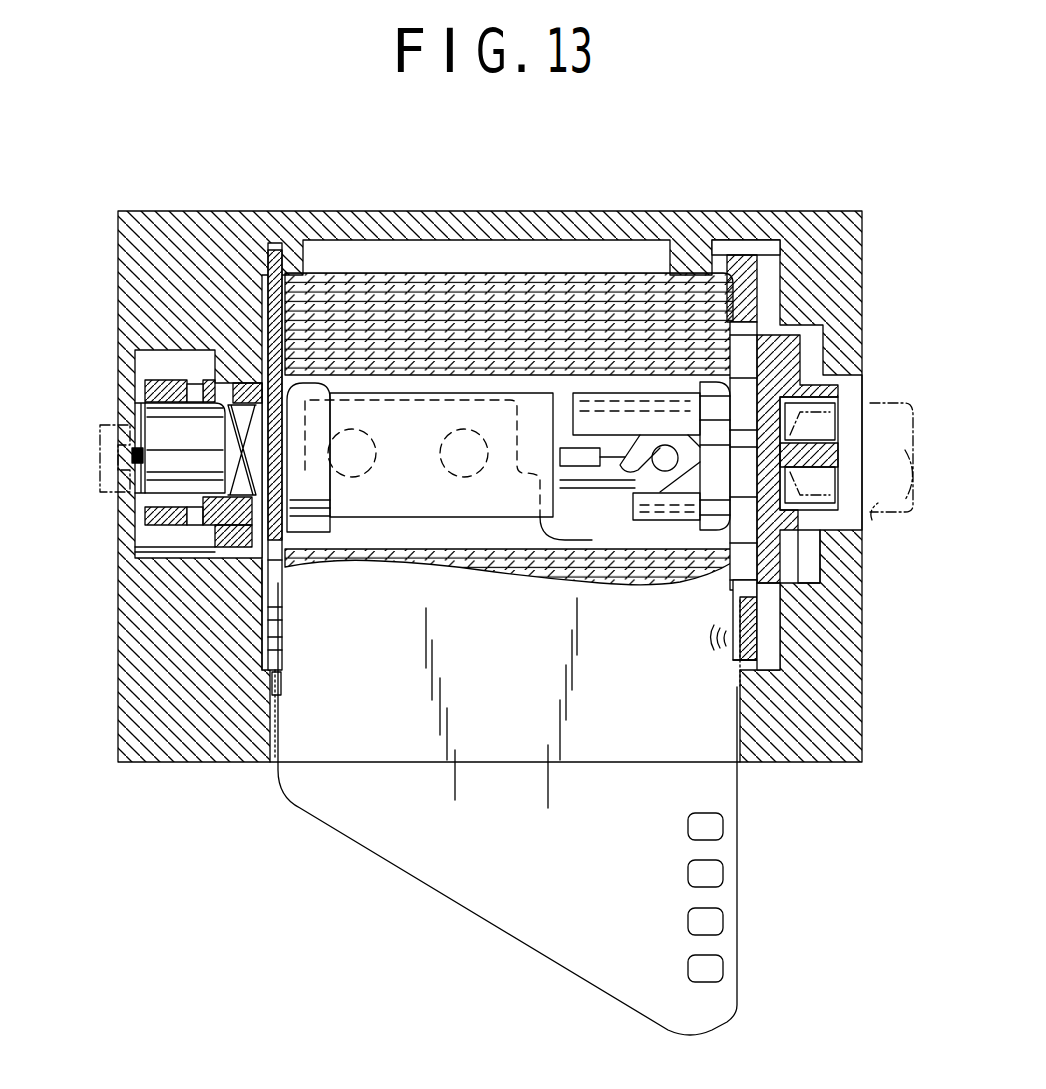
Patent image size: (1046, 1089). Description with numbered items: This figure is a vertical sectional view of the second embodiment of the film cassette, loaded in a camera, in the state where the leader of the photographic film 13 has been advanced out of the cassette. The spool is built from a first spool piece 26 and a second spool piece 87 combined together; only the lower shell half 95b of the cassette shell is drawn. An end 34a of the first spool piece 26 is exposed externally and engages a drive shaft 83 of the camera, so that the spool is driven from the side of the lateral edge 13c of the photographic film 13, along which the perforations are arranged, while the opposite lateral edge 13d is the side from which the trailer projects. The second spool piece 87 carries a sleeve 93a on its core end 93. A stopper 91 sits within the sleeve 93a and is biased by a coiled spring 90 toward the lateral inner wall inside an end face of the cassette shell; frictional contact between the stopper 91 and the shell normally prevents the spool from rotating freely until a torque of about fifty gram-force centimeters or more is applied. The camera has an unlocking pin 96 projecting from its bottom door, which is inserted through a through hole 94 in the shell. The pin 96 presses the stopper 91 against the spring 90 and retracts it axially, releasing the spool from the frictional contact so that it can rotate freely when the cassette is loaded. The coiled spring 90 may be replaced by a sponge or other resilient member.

The photographic film 13 is at (737, 905).
The lateral edge 13c is at (737, 790).
The lateral edge 13d is at (282, 690).
The first spool piece 26 is at (622, 393).
The end of the first spool piece 34a is at (860, 388).
The drive shaft 83 is at (870, 527).
The second spool piece 87 is at (396, 420).
The coiled spring 90 is at (158, 443).
The stopper 91 is at (225, 437).
The core end 93 is at (205, 520).
The sleeve 93a is at (150, 550).
The through hole 94 is at (178, 507).
The lower shell half 95b is at (135, 686).
The unlocking pin 96 is at (98, 425).